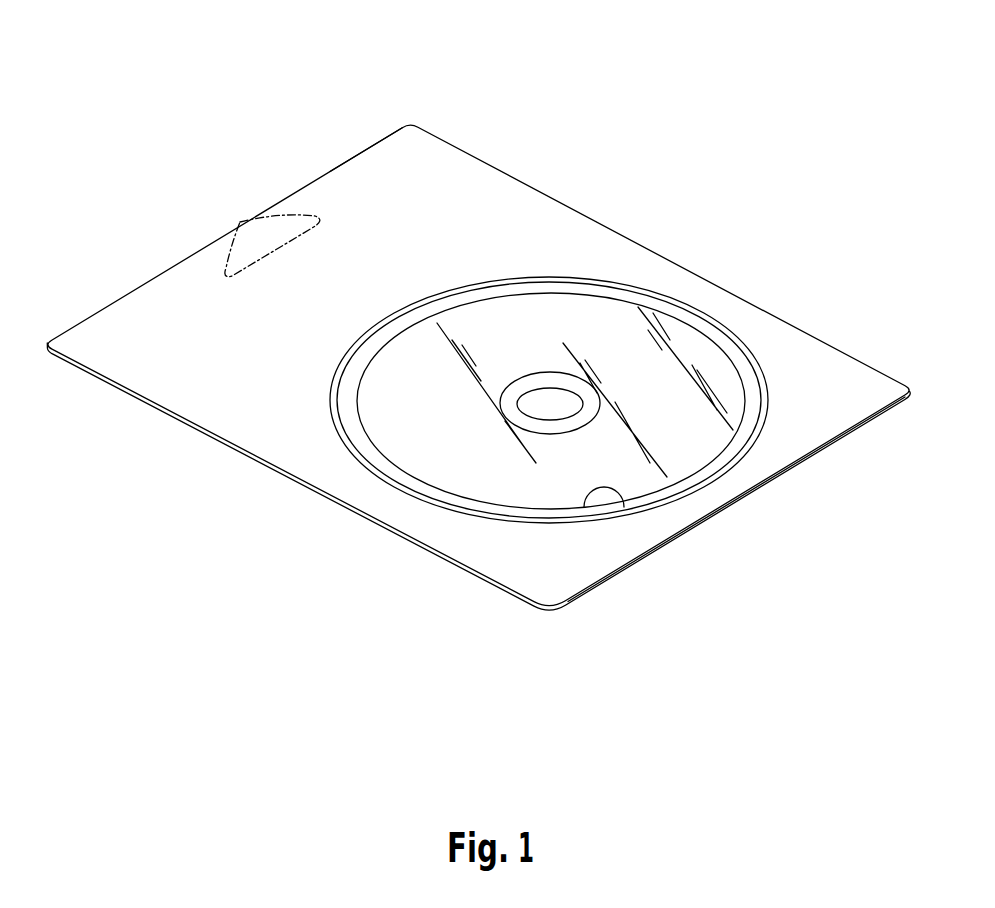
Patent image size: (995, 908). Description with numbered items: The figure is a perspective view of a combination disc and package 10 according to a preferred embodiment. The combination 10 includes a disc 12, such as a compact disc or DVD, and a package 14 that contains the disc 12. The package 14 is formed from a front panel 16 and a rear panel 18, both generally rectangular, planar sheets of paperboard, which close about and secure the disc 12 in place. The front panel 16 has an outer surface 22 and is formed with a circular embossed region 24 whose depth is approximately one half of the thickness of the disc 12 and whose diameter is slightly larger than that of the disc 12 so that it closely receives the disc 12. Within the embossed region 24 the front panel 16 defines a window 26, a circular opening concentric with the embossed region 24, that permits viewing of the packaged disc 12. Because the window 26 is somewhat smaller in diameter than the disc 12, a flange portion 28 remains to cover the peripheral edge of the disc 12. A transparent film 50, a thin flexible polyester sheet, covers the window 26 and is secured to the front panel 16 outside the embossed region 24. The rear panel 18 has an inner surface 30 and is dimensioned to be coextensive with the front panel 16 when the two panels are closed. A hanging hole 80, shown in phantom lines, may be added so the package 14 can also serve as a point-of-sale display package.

The combination disc and package 10 is at (519, 90).
The disc 12 is at (673, 347).
The package 14 is at (542, 190).
The front panel 16 is at (362, 180).
The rear panel 18 is at (572, 392).
The outer surface 22 is at (210, 354).
The embossed region 24 is at (380, 463).
The window 26 is at (613, 495).
The flange portion 28 is at (738, 358).
The inner surface 30 is at (563, 414).
The transparent film 50 is at (525, 470).
The hanging hole 80 is at (273, 218).